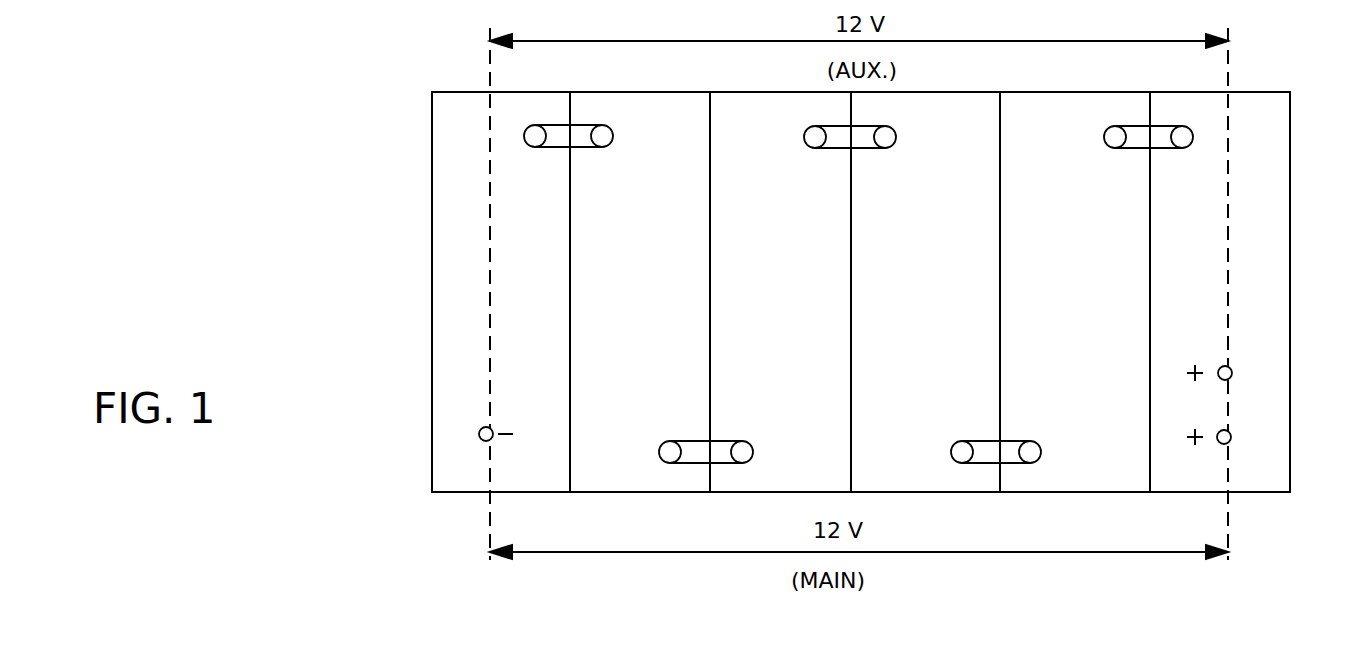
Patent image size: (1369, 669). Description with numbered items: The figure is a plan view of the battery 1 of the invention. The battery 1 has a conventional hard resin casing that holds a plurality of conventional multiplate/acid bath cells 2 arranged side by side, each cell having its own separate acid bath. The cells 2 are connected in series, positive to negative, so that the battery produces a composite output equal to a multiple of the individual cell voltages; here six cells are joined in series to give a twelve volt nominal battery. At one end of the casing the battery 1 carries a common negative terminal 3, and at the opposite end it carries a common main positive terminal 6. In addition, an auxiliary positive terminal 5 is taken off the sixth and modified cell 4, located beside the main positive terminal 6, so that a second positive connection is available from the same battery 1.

The battery 1 is at (398, 275).
The cells 2 is at (455, 162).
The common negative terminal 3 is at (479, 434).
The sixth and modified cell 4 is at (1200, 220).
The auxiliary positive terminal 5 is at (1232, 374).
The common (main) positive terminal 6 is at (1231, 438).